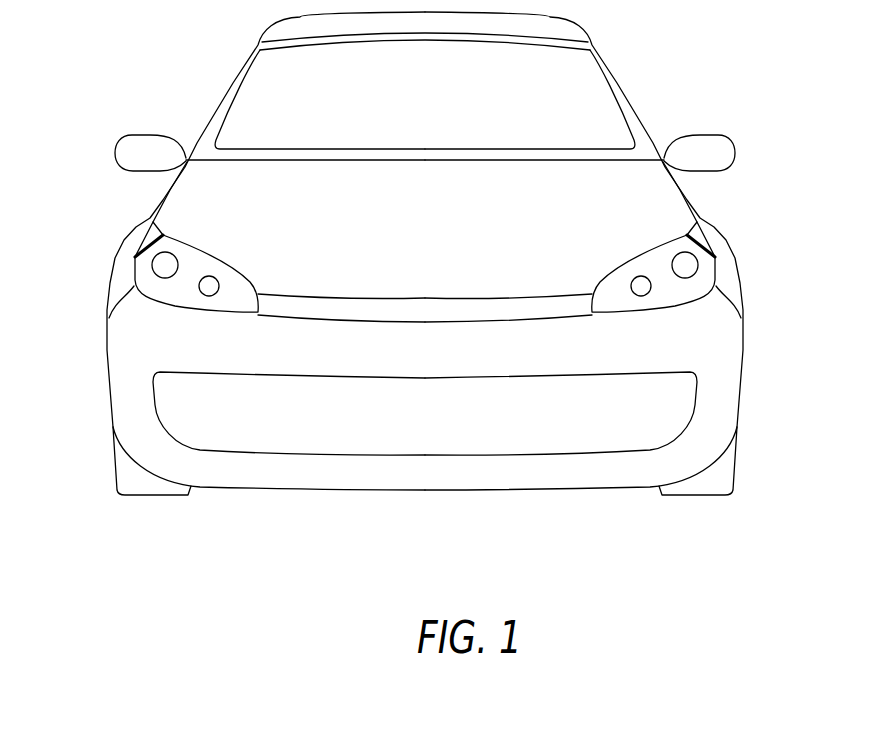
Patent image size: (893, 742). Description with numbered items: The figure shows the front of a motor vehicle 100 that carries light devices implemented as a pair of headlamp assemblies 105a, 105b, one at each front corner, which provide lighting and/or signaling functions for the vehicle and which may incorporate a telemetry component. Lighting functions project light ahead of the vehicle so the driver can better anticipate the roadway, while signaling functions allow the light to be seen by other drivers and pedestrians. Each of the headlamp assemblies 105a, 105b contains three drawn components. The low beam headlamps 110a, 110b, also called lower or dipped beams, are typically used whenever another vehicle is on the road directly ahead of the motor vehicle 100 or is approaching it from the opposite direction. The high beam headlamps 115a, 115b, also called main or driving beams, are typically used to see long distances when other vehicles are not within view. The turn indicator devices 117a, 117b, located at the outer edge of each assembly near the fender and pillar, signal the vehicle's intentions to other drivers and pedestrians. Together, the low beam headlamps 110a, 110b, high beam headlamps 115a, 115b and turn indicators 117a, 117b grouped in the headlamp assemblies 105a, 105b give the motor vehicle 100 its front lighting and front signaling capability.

The motor vehicle 100 is at (623, 60).
The headlamp assembly 105a is at (243, 272).
The headlamp assembly 105b is at (605, 275).
The low beam headlamp 110a is at (180, 261).
The low beam headlamp 110b is at (681, 253).
The high beam headlamp 115a is at (212, 296).
The high beam headlamp 115b is at (645, 297).
The turn indicator device 117a is at (153, 220).
The turn indicator device 117b is at (700, 230).